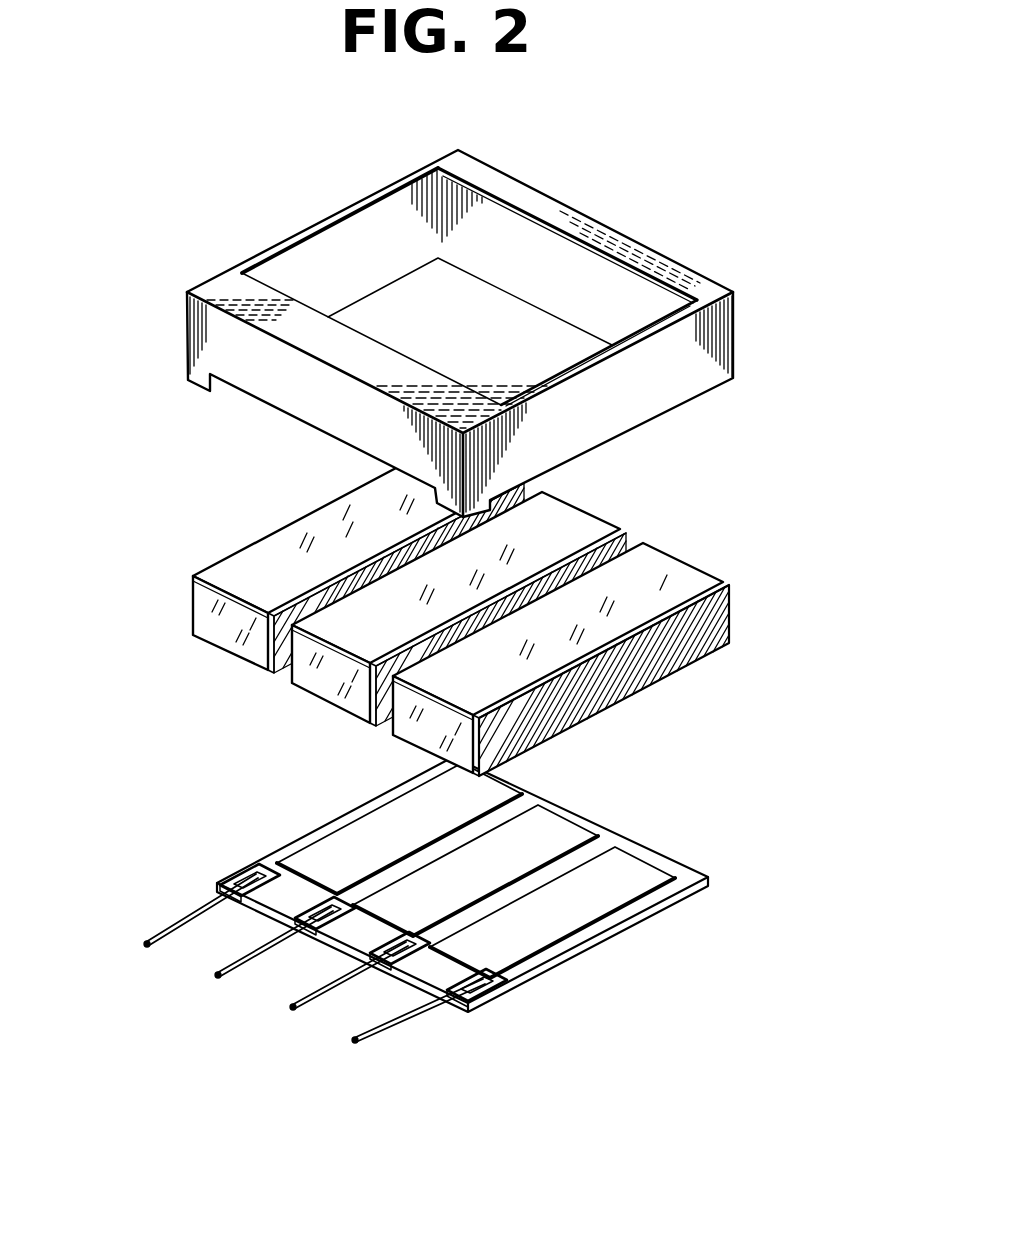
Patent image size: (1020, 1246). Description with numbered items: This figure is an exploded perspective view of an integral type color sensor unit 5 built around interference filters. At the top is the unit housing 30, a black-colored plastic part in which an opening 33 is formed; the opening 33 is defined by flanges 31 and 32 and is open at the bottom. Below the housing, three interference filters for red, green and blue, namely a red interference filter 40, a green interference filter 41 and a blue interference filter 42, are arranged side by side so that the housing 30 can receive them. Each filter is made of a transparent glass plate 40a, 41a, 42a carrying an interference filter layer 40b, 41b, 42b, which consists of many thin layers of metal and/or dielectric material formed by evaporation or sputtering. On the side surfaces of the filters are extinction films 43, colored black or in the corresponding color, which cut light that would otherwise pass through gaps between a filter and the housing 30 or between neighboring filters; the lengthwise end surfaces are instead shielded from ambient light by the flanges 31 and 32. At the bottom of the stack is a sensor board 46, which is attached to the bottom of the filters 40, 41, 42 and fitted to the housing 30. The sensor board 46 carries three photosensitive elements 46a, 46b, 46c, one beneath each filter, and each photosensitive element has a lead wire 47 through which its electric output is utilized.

The color sensor unit 5 is at (311, 160).
The unit housing 30 is at (509, 325).
The flange 31 is at (562, 212).
The flange 32 is at (385, 352).
The opening 33 is at (298, 262).
The red interference filter 40 is at (337, 569).
The glass plate 40a is at (240, 645).
The interference filter layer 40b is at (297, 545).
The green interference filter 41 is at (472, 597).
The glass plate 41a is at (334, 694).
The interference filter layer 41b is at (562, 528).
The blue interference filter 42 is at (583, 635).
The glass plate 42a is at (410, 735).
The interference filter layer 42b is at (683, 595).
The extinction film 43 is at (192, 606).
The sensor board 46 is at (485, 876).
The photosensitive element 46a is at (340, 852).
The photosensitive element 46b is at (560, 830).
The photosensitive element 46c is at (645, 877).
The lead wire 47 is at (147, 950).